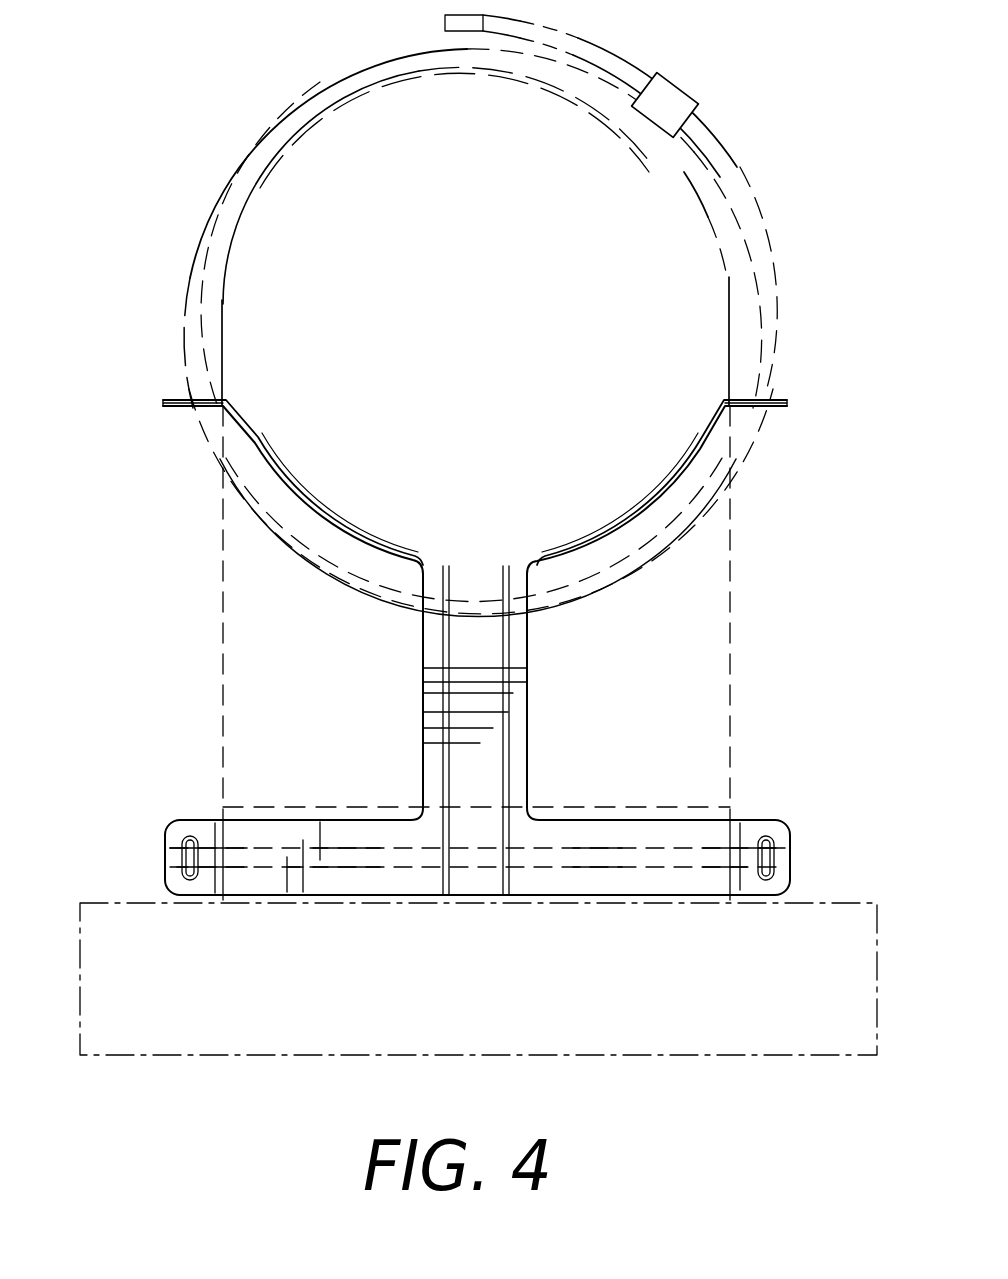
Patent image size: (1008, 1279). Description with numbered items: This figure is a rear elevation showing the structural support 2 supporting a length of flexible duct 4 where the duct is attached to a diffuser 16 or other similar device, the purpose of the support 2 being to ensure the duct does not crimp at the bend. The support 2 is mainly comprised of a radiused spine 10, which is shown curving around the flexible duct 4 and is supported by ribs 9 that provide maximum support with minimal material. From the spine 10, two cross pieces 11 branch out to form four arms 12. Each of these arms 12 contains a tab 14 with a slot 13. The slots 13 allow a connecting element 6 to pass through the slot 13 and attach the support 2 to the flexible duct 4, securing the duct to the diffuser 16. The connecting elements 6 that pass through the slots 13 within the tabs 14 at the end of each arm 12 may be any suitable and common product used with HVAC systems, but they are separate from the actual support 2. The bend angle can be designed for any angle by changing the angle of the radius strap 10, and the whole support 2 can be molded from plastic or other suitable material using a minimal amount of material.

The structural support 2 is at (400, 700).
The flexible duct 4 is at (508, 390).
The connecting element 6 is at (660, 76).
The ribs 9 is at (452, 722).
The radiused spine 10 is at (498, 665).
The cross pieces 11 is at (780, 820).
The arms 12 is at (300, 470).
The slot 13 is at (190, 857).
The tab 14 is at (206, 400).
The diffuser 16 is at (503, 1005).